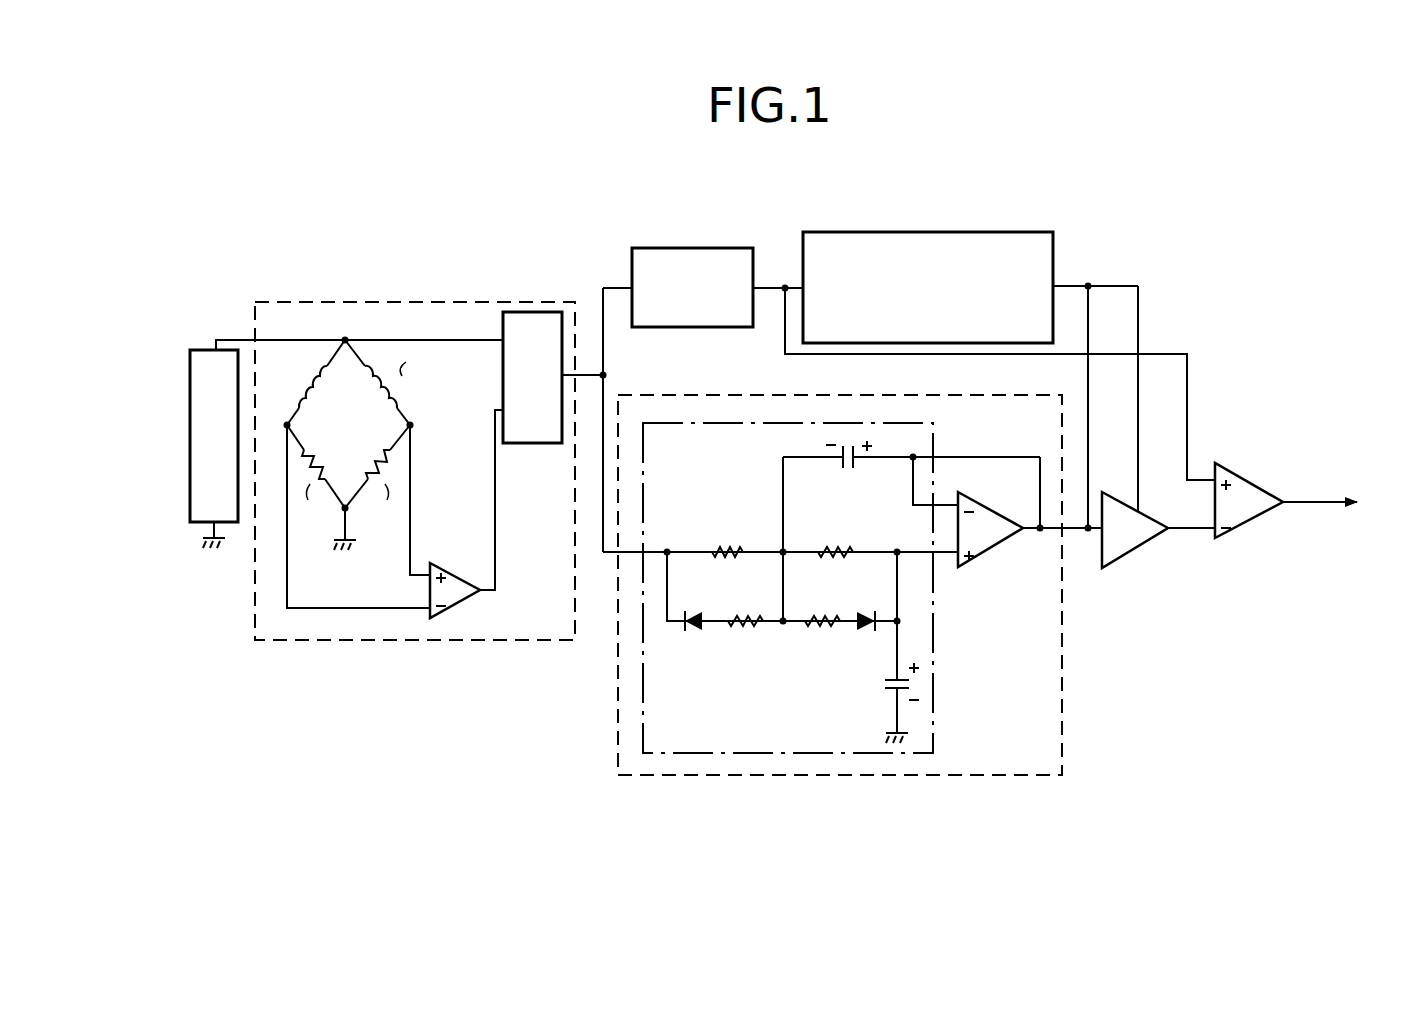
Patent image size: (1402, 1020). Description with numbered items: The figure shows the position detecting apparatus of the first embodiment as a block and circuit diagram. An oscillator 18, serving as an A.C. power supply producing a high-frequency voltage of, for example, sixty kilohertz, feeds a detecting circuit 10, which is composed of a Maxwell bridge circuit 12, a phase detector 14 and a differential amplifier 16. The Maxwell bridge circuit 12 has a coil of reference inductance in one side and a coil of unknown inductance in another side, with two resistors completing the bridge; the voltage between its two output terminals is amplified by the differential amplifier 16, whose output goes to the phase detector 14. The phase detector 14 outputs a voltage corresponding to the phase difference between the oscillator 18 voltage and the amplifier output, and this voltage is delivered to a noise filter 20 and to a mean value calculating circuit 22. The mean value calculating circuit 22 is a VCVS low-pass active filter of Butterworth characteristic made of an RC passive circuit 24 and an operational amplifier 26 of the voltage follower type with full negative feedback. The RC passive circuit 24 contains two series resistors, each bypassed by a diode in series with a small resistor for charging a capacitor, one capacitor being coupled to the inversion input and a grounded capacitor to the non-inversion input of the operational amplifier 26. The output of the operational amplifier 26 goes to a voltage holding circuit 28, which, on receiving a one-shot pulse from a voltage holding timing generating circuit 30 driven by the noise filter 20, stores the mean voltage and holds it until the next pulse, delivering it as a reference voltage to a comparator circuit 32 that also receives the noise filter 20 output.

The detecting circuit 10 is at (283, 302).
The Maxwell bridge circuit 12 is at (352, 338).
The phase detector 14 is at (535, 443).
The differential amplifier 16 is at (452, 566).
The oscillator 18 is at (214, 344).
The noise filter 20 is at (704, 248).
The mean value calculating circuit 22 is at (670, 778).
The RC passive circuit 24 is at (933, 735).
The operational amplifier 26 is at (996, 548).
The voltage holding circuit 28 is at (1138, 553).
The voltage holding timing generating circuit 30 is at (886, 232).
The comparator circuit 32 is at (1255, 523).